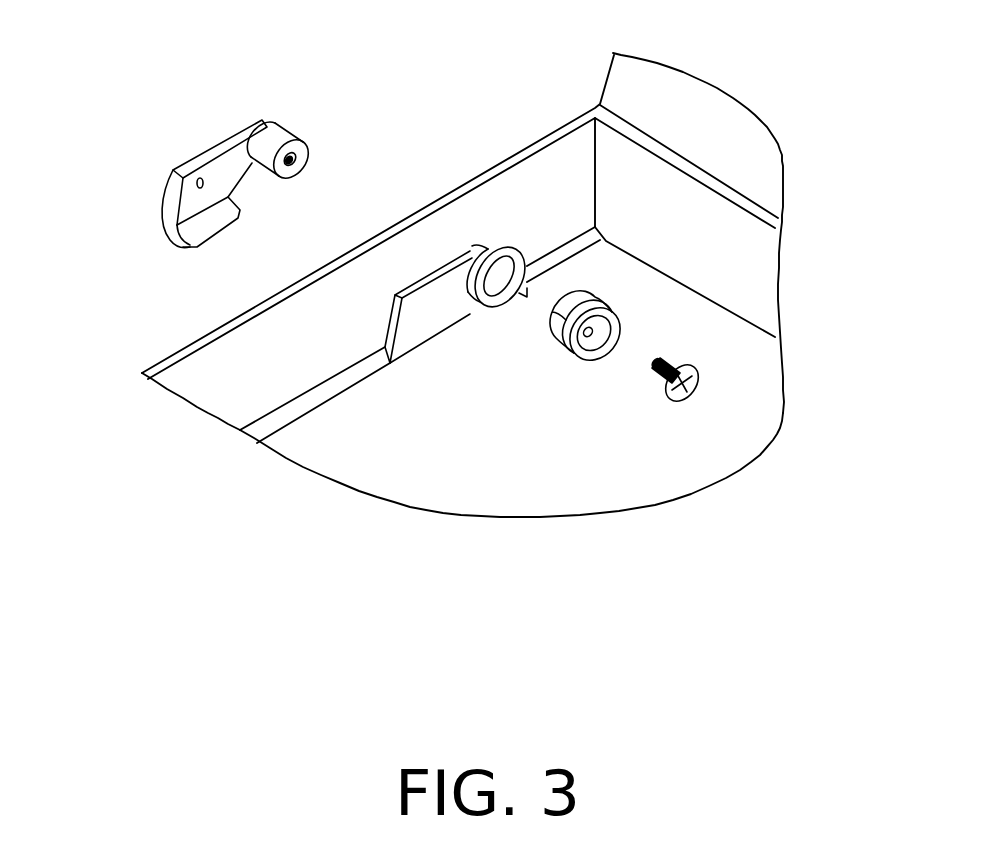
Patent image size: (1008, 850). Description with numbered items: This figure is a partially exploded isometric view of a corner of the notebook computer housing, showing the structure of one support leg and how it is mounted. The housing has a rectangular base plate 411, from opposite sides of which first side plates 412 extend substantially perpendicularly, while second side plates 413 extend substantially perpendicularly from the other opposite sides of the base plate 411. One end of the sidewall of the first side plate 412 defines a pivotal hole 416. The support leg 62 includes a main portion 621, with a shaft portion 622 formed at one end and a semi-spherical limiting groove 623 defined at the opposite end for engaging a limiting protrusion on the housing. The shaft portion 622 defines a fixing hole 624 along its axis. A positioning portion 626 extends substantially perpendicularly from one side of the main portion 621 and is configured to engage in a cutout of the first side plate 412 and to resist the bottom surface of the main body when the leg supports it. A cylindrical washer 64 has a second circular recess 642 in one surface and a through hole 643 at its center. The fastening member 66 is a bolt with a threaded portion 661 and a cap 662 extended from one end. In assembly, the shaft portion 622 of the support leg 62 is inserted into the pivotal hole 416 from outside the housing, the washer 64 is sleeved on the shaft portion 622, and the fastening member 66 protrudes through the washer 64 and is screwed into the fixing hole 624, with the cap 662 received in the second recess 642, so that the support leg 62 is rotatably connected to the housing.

The support leg 62 is at (236, 171).
The main portion 621 is at (182, 129).
The shaft portion 622 is at (330, 107).
The semi-spherical limiting groove 623 is at (196, 184).
The fixing hole 624 is at (296, 157).
The positioning portion 626 is at (210, 220).
The base plate 411 is at (316, 447).
The first side plate 412 is at (534, 184).
The second side plate 413 is at (743, 255).
The pivotal hole 416 is at (497, 292).
The washer 64 is at (665, 431).
The second circular recess 642 is at (711, 431).
The through hole 643 is at (594, 332).
The fastening member 66 is at (733, 498).
The threaded portion 661 is at (657, 380).
The cap 662 is at (694, 391).